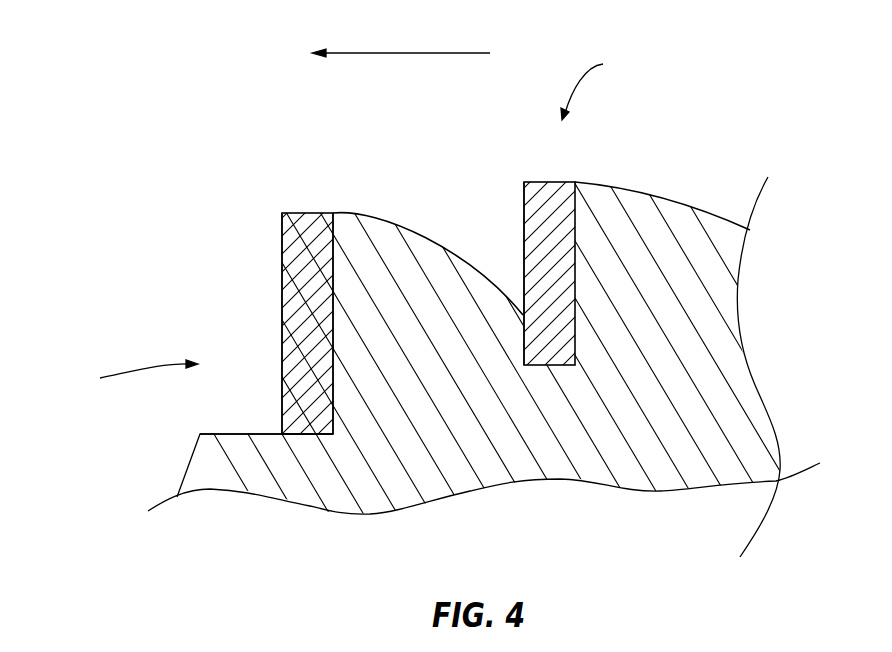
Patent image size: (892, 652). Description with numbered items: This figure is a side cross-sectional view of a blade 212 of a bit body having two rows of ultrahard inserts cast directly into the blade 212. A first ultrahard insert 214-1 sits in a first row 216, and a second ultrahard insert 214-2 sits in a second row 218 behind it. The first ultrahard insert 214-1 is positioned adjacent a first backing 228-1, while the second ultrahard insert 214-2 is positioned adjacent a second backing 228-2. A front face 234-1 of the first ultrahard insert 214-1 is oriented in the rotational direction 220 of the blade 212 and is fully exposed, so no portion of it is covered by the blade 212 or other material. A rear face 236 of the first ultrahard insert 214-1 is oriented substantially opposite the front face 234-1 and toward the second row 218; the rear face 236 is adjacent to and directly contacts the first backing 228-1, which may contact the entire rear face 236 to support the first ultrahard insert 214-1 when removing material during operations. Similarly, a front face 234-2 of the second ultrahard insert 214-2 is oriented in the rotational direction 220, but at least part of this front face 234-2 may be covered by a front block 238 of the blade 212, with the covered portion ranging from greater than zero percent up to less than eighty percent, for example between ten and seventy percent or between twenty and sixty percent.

The blade 212 is at (517, 458).
The first ultrahard insert 214-1 is at (303, 260).
The second ultrahard insert 214-2 is at (550, 207).
The first row 216 is at (129, 375).
The second row 218 is at (602, 86).
The rotational direction 220 is at (448, 53).
The first backing 228-1 is at (352, 246).
The second backing 228-2 is at (652, 245).
The front face 234-1 is at (282, 302).
The front face 234-2 is at (525, 315).
The rear face 236 is at (396, 221).
The front block 238 is at (503, 312).